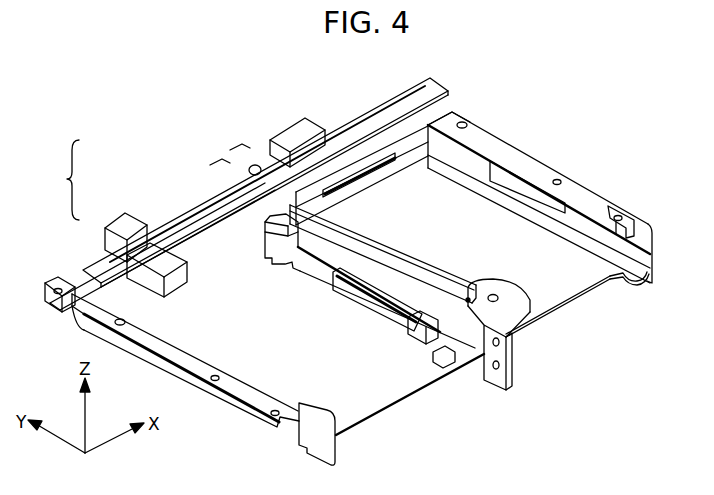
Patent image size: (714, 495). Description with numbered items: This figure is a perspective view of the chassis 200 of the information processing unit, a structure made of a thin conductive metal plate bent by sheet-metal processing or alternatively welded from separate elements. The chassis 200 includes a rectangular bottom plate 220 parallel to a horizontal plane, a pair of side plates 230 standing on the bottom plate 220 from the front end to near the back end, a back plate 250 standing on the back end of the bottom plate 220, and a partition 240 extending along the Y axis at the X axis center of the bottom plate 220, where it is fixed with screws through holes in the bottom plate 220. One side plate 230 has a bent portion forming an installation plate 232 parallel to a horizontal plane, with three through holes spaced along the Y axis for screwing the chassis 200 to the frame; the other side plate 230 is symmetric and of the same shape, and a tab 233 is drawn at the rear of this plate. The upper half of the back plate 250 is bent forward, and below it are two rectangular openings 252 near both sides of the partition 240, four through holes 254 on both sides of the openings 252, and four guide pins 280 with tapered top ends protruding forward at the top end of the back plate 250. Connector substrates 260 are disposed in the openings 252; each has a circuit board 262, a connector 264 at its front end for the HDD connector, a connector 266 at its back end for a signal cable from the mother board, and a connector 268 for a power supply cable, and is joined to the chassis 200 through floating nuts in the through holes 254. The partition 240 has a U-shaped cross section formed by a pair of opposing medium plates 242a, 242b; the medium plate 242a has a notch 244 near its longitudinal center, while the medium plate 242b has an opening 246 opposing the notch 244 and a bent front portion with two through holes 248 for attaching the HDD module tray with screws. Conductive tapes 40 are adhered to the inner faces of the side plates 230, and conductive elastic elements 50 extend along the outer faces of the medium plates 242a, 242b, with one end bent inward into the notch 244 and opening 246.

The chassis 200 is at (365, 266).
The bottom plate 220 is at (452, 290).
The side plates 230 is at (365, 266).
The installation plate 232 is at (456, 110).
The tab 233 is at (616, 203).
The partition 240 is at (501, 361).
The medium plate 242a is at (476, 380).
The medium plate 242b is at (586, 304).
The notch 244 is at (415, 332).
The opening 246 is at (438, 354).
The through holes 248 is at (497, 340).
The back plate 250 is at (150, 194).
The openings 252 is at (125, 280).
The through holes 254 is at (250, 168).
The connector substrate 260 is at (243, 170).
The circuit board 262 is at (172, 202).
The connector 264 is at (172, 265).
The connector 266 is at (123, 230).
The connector 268 is at (147, 210).
The guide pins 280 is at (205, 195).
The conductive tapes 40 is at (638, 290).
The conductive elastic elements 50 is at (388, 316).